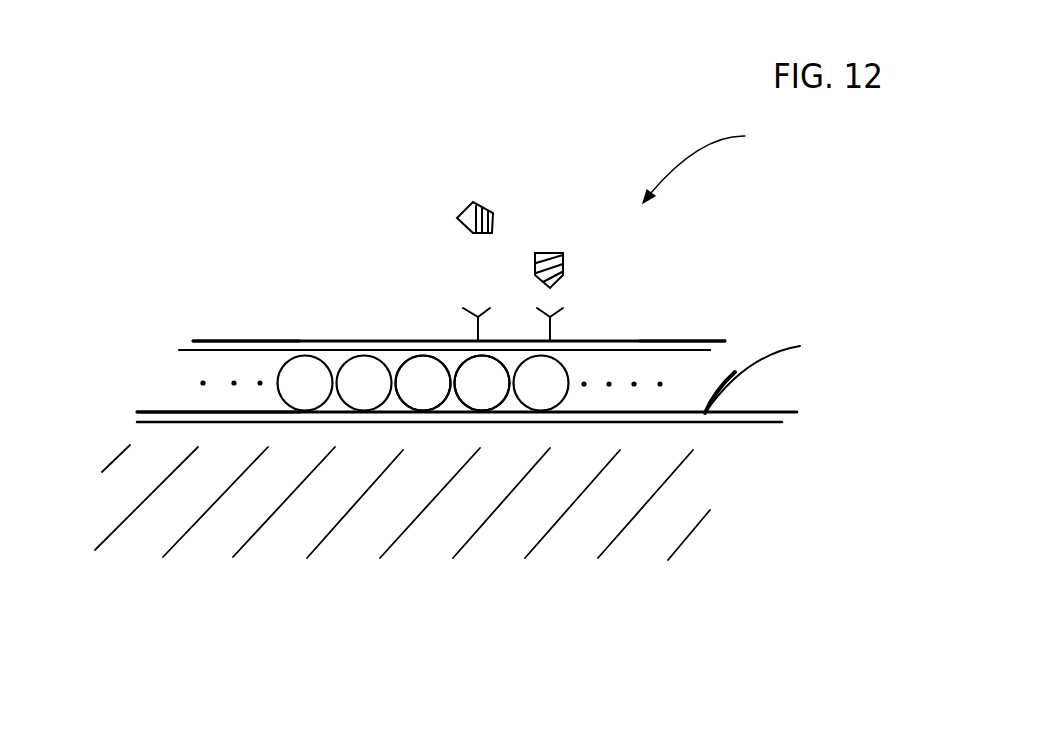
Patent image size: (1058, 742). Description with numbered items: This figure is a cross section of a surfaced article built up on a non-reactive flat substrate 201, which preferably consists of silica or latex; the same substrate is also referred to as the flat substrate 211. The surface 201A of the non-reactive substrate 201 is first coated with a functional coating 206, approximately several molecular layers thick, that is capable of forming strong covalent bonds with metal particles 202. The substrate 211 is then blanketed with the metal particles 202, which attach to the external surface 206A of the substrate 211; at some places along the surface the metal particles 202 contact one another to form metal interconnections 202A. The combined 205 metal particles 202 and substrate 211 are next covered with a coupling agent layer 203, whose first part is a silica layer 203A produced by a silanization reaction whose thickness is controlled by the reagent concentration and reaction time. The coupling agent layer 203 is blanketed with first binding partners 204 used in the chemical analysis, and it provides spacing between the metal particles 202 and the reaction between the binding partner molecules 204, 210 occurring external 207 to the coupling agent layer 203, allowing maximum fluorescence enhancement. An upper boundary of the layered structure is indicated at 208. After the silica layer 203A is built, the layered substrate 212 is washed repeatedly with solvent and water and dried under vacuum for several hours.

The non-reactive flat substrate 201 is at (698, 533).
The surface of the non-reactive substrate 201A is at (746, 425).
The metal particles 202 is at (485, 378).
The metal interconnections 202A is at (460, 362).
The coupling agent layer 203 is at (585, 342).
The silica layer 203A is at (262, 370).
The first binding partners 204 is at (471, 310).
The combined metal particles and substrate 205 is at (620, 342).
The functional coating 206 is at (773, 415).
The external surface of the substrate 206A is at (185, 410).
The external region 207 is at (716, 161).
The top layer edge 208 is at (223, 338).
The binding partner molecule 210 is at (478, 207).
The flat substrate 211 is at (771, 370).
The layered substrate 212 is at (708, 343).